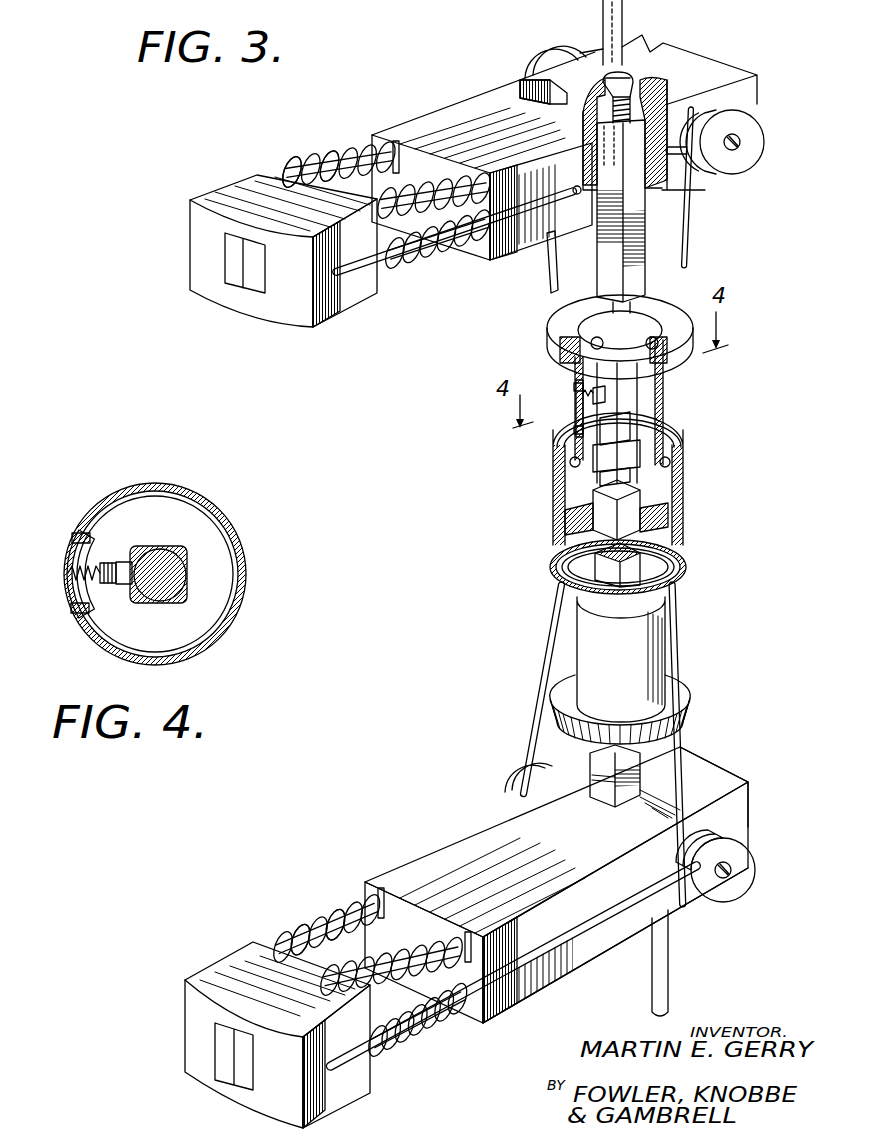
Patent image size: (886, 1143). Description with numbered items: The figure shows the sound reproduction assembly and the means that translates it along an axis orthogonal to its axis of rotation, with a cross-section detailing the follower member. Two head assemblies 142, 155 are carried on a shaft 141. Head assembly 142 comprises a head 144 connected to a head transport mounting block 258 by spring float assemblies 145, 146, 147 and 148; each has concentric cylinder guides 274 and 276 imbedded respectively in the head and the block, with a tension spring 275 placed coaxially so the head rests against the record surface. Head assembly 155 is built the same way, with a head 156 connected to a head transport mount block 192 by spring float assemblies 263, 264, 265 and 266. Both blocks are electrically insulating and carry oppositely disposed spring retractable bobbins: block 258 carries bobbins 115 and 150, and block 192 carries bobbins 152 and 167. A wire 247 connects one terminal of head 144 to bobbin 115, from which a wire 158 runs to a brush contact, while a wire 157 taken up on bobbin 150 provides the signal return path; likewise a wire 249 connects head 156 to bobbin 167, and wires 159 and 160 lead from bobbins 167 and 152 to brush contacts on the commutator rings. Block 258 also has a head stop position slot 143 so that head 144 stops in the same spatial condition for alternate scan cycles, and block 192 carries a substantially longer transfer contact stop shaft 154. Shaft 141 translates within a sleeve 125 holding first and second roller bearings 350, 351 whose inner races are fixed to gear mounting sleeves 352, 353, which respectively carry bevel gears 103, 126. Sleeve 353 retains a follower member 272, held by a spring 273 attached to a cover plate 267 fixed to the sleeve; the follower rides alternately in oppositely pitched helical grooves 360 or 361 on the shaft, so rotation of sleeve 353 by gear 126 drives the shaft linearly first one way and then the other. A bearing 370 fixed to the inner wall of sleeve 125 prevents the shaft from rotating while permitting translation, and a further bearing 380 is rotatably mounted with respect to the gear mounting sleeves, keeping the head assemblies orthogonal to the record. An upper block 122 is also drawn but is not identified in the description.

In FIG. 3, the bevel gear 103 is at (670, 748).
In FIG. 3, the spring retractable bobbin 115 is at (762, 125).
In FIG. 3, the upper bearing block 122 is at (645, 50).
In FIG. 3, the sleeve 125 is at (685, 477).
In FIG. 3, the bevel gear 126 is at (552, 332).
In FIG. 3, the shaft 141 is at (637, 283).
In FIG. 4, the shaft 141 is at (187, 555).
In FIG. 3, the head assembly 142 is at (477, 154).
In FIG. 3, the head stop position slot 143 is at (517, 82).
In FIG. 3, the head 144 is at (197, 255).
In FIG. 3, the spring float assembly 145 is at (348, 160).
In FIG. 3, the spring float assembly 146 is at (490, 190).
In FIG. 3, the spring float assembly 147 is at (422, 274).
In FIG. 3, the spring float assembly 148 is at (389, 188).
In FIG. 3, the spring retractable bobbin 150 is at (560, 50).
In FIG. 3, the spring retractable bobbin 152 is at (588, 885).
In FIG. 3, the transfer contact stop shaft 154 is at (668, 970).
In FIG. 3, the head assembly 155 is at (477, 822).
In FIG. 3, the head 156 is at (243, 953).
In FIG. 3, the wire 157 is at (550, 263).
In FIG. 3, the wire 158 is at (697, 218).
In FIG. 3, the wire 159 is at (680, 637).
In FIG. 3, the wire 160 is at (553, 647).
In FIG. 3, the spring retractable bobbin 167 is at (747, 848).
In FIG. 3, the head transport mount block 192 is at (573, 967).
In FIG. 3, the wire 247 is at (571, 186).
In FIG. 3, the wire 249 is at (632, 899).
In FIG. 3, the head transport mounting block 258 is at (478, 93).
In FIG. 3, the spring float assembly 263 is at (376, 946).
In FIG. 3, the spring float assembly 264 is at (337, 910).
In FIG. 3, the spring float assembly 265 is at (436, 943).
In FIG. 3, the spring float assembly 266 is at (397, 1055).
In FIG. 3, the follower member cover plate 267 is at (573, 432).
In FIG. 4, the follower member cover plate 267 is at (72, 540).
In FIG. 3, the follower member 272 is at (593, 390).
In FIG. 4, the follower member 272 is at (125, 562).
In FIG. 3, the spring 273 is at (588, 400).
In FIG. 4, the spring 273 is at (100, 566).
In FIG. 3, the concentric cylinder guide 274 is at (286, 172).
In FIG. 3, the tension spring 275 is at (327, 165).
In FIG. 3, the concentric cylinder guide 276 is at (393, 150).
In FIG. 3, the roller bearing 350 is at (686, 560).
In FIG. 3, the roller bearing 351 is at (680, 433).
In FIG. 3, the gear mounting sleeve 352 is at (650, 662).
In FIG. 3, the gear mounting sleeve 353 is at (663, 387).
In FIG. 4, the gear mounting sleeve 353 is at (245, 598).
In FIG. 3, the helical groove 360 is at (605, 460).
In FIG. 3, the helical groove 361 is at (607, 482).
In FIG. 3, the bearing 370 is at (660, 525).
In FIG. 3, the bearing 380 is at (597, 325).